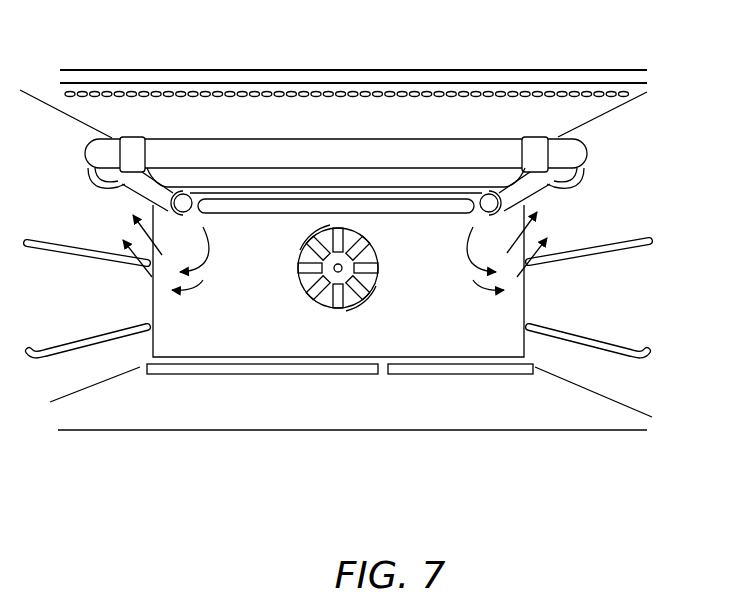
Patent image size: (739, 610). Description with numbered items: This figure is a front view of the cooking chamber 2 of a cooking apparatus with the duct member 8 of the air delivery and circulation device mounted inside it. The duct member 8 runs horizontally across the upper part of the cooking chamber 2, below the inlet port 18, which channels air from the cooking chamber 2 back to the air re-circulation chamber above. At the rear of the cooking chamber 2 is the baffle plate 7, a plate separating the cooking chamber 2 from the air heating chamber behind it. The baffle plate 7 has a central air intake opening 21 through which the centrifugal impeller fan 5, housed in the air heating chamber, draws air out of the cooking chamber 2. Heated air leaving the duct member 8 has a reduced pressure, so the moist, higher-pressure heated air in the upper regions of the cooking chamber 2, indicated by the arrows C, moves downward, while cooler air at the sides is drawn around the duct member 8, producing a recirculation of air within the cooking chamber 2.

The duct member 8 is at (403, 160).
The inlet port 18 is at (587, 92).
The cooking chamber 2 is at (560, 218).
The baffle plate 7 is at (217, 343).
The impeller fan 5 is at (362, 292).
The air intake opening 21 is at (325, 300).
The airflow C is at (525, 277).